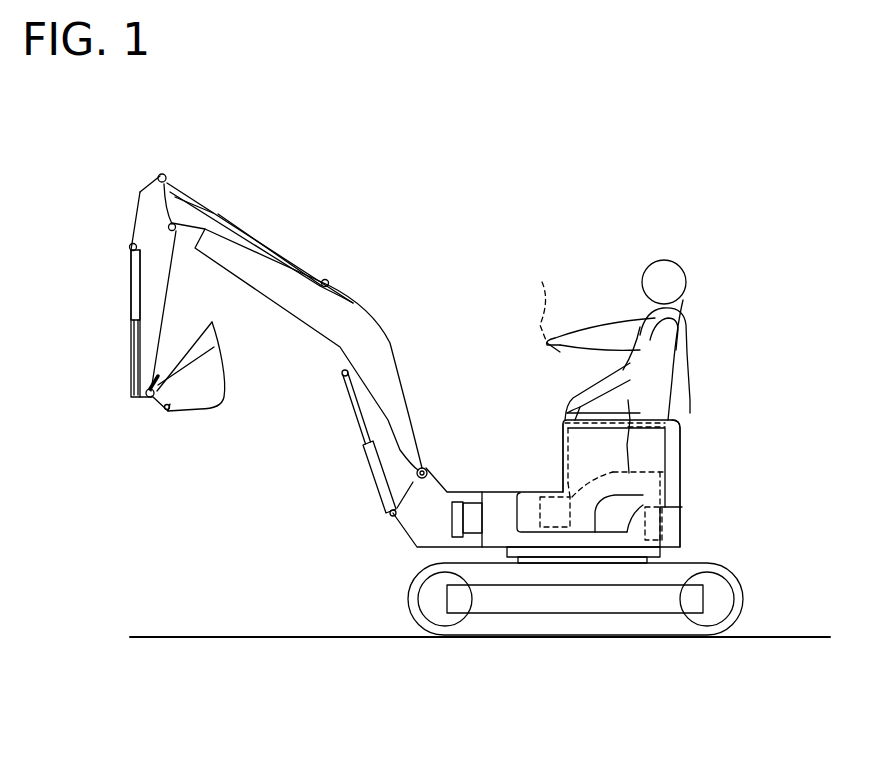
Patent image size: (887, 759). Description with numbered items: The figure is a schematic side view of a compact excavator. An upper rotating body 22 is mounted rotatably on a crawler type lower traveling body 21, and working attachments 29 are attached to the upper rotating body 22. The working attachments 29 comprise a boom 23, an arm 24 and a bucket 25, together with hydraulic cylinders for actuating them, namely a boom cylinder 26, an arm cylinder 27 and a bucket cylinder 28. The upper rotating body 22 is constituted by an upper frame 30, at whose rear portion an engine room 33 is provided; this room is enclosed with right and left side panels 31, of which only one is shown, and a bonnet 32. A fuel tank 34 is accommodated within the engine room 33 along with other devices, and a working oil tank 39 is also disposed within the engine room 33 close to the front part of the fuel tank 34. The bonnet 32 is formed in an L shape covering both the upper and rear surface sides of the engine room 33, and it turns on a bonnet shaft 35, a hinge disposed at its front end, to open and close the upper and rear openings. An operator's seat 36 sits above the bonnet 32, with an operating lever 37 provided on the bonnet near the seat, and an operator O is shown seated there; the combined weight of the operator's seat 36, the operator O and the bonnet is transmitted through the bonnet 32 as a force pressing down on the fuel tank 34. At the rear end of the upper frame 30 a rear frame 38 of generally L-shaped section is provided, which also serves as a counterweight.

The lower traveling body 21 is at (632, 648).
The upper rotating body 22 is at (712, 400).
The boom 23 is at (393, 347).
The arm 24 is at (148, 302).
The bucket 25 is at (193, 409).
The boom cylinder 26 is at (353, 413).
The arm cylinder 27 is at (283, 255).
The bucket cylinder 28 is at (132, 350).
The working attachments 29 is at (367, 299).
The upper frame 30 is at (570, 553).
The side panel 31 is at (563, 480).
The bonnet 32 is at (683, 438).
The engine room 33 is at (655, 510).
The fuel tank 34 is at (667, 472).
The bonnet shaft 35 is at (567, 417).
The operator's seat 36 is at (693, 353).
The operating lever 37 is at (539, 299).
The rear frame 38 is at (673, 535).
The working oil tank 39 is at (563, 443).
The operator O is at (687, 278).